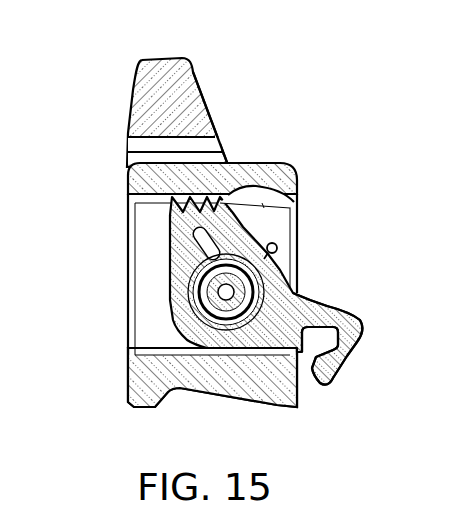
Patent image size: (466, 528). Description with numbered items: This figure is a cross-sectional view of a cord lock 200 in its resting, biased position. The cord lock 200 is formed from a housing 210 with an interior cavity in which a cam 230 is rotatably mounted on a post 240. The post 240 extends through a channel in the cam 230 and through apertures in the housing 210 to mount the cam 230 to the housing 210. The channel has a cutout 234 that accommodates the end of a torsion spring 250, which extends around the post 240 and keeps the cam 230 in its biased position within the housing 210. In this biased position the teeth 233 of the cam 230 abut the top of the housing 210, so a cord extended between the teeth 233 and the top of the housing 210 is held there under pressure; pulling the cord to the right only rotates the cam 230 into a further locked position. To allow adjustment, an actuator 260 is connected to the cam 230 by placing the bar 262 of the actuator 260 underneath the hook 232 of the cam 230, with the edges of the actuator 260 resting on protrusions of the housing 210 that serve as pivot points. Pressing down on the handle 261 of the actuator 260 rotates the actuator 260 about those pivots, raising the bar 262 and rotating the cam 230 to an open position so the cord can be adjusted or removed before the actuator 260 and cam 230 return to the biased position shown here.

The cord lock 200 is at (226, 238).
The housing 210 is at (290, 172).
The cam 230 is at (280, 303).
The hook 232 is at (338, 373).
The teeth 233 is at (290, 196).
The cutout 234 is at (195, 238).
The post 240 is at (243, 312).
The torsion spring 250 is at (192, 312).
The actuator 260 is at (178, 100).
The handle 261 is at (203, 107).
The bar 262 is at (313, 350).